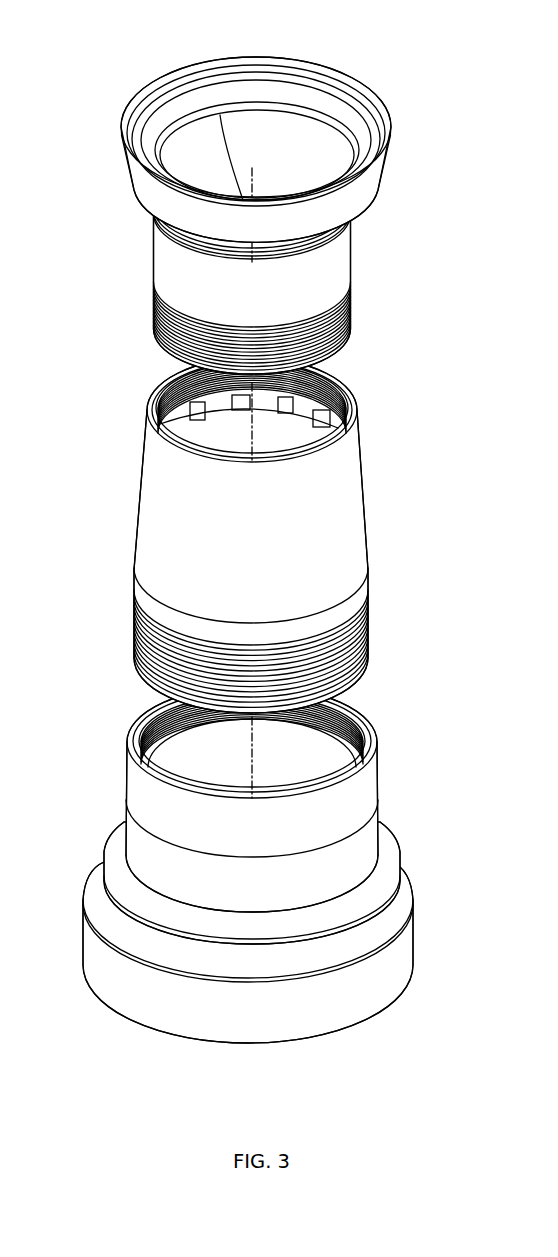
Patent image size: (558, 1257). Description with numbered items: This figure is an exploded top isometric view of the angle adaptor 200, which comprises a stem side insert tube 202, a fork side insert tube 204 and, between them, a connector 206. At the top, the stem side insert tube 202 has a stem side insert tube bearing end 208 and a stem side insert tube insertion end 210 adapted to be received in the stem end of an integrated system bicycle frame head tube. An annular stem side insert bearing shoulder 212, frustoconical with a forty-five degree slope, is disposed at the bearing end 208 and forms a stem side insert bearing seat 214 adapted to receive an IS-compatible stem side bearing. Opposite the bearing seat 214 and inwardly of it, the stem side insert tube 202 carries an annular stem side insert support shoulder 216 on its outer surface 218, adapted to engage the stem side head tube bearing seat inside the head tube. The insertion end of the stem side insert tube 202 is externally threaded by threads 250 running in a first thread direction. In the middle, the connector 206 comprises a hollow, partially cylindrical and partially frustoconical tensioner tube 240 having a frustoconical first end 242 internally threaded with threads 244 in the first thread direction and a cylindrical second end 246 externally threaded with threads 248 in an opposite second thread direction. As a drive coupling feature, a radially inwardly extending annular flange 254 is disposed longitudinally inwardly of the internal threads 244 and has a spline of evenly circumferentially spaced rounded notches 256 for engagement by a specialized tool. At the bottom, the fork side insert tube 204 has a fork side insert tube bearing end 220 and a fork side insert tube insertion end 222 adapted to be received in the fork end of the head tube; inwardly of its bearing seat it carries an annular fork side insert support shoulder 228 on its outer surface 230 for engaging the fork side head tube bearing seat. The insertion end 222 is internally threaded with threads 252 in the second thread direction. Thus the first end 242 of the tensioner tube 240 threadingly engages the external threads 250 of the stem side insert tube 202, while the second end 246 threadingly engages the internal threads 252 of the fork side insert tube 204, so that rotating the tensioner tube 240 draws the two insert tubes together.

The angle adaptor 200 is at (235, 548).
The stem side insert tube 202 is at (260, 210).
The fork side insert tube 204 is at (256, 871).
The connector 206 is at (262, 505).
The stem side insert tube bearing end 208 is at (271, 127).
The stem side insert tube insertion end 210 is at (298, 298).
The stem side insert bearing shoulder 212 is at (268, 92).
The stem side insert bearing seat 214 is at (230, 84).
The stem side insert support shoulder 216 is at (258, 250).
The outer surface 218 is at (290, 264).
The fork side insert tube bearing end 220 is at (138, 1025).
The fork side insert tube insertion end 222 is at (262, 728).
The fork side insert support shoulder 228 is at (385, 848).
The outer surface 230 is at (275, 907).
The tensioner tube 240 is at (216, 380).
The first end 242 is at (151, 368).
The internal threads 244 is at (160, 371).
The second end 246 is at (359, 684).
The external threads 248 is at (368, 632).
The external threads 250 is at (352, 301).
The internal threads 252 is at (186, 722).
The annular flange 254 is at (227, 408).
The rounded notches 256 is at (292, 404).